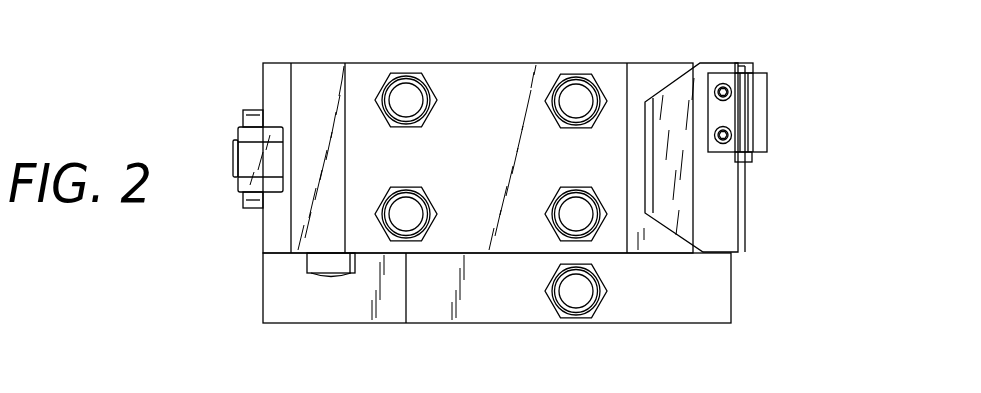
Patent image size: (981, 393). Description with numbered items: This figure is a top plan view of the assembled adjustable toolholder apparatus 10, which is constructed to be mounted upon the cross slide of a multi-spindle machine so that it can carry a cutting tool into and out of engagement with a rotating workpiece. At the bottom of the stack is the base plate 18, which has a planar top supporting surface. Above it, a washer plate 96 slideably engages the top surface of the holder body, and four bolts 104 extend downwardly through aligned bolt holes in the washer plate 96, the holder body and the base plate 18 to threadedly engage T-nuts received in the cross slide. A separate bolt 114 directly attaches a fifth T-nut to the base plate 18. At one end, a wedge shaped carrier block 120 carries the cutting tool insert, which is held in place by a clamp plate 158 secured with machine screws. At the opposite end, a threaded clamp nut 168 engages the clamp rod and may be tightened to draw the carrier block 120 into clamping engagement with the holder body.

The adjustable toolholder apparatus 10 is at (815, 55).
The base plate 18 is at (717, 288).
The washer plate 96 is at (457, 72).
The bolts 104 is at (578, 87).
The bolt 114 is at (562, 302).
The wedge shaped carrier block 120 is at (722, 210).
The clamp plate 158 is at (735, 117).
The threaded clamp nut 168 is at (245, 178).